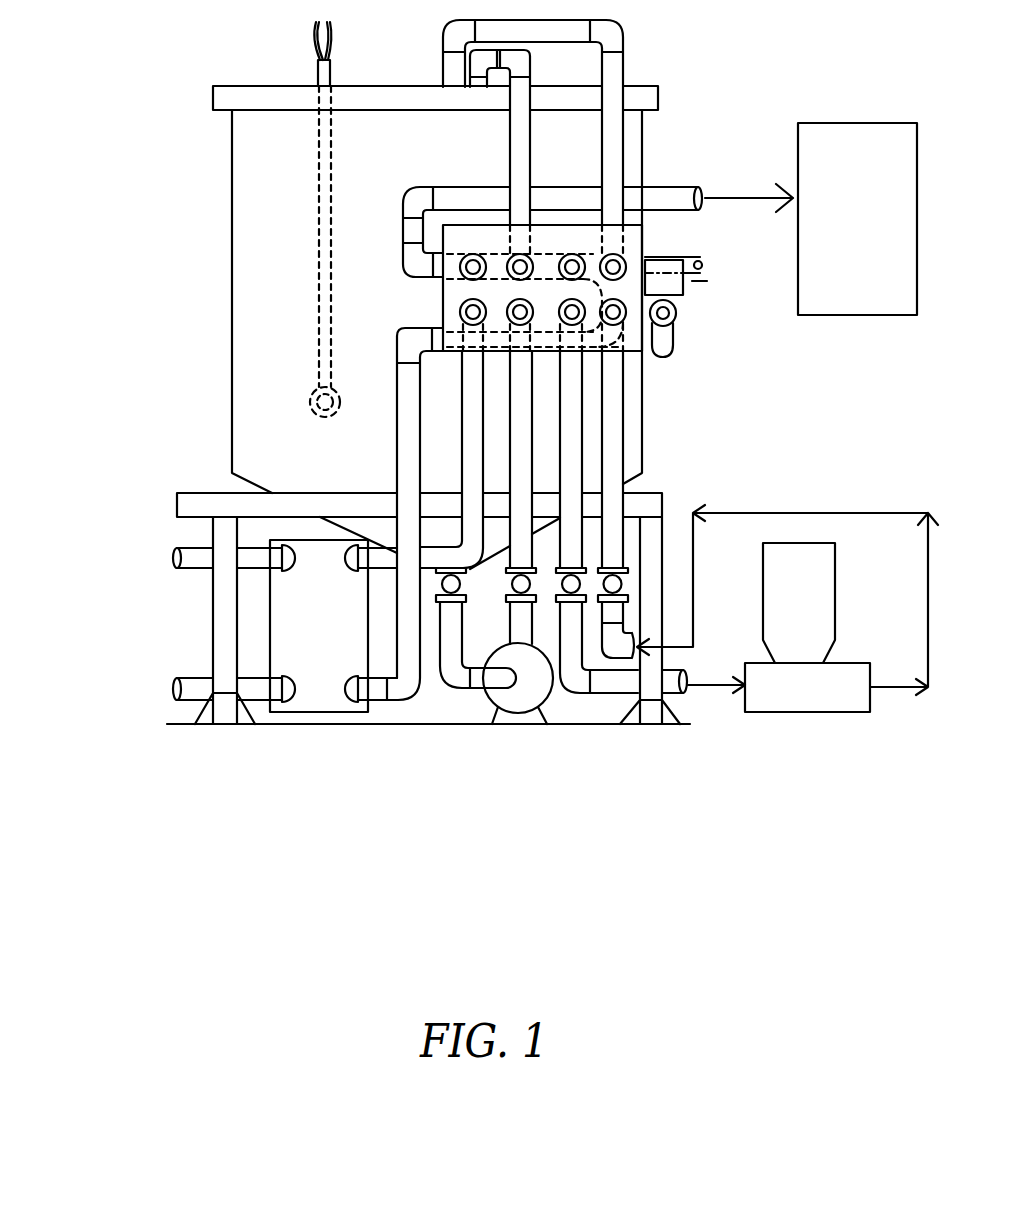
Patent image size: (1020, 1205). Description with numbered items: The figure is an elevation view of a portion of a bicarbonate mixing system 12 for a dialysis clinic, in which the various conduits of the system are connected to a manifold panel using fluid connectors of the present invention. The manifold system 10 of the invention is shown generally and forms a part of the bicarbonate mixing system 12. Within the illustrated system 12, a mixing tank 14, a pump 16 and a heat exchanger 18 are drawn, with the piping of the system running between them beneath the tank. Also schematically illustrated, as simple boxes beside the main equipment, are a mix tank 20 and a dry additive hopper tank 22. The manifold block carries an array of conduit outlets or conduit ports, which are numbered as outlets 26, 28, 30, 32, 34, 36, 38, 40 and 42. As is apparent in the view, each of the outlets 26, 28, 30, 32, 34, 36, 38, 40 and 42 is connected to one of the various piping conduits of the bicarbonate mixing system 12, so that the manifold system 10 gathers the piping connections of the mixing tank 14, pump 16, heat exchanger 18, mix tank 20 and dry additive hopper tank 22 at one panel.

The manifold system 10 is at (448, 292).
The bicarbonate mixing system 12 is at (172, 148).
The mixing tank 14 is at (250, 212).
The pump 16 is at (515, 702).
The heat exchanger 18 is at (318, 697).
The mix tank 20 is at (880, 225).
The dry additive hopper tank 22 is at (808, 603).
The conduit outlet 26 is at (473, 254).
The conduit outlet 28 is at (530, 257).
The conduit outlet 30 is at (571, 254).
The conduit outlet 32 is at (614, 256).
The conduit outlet 34 is at (460, 312).
The conduit outlet 36 is at (511, 320).
The conduit outlet 38 is at (573, 324).
The conduit outlet 40 is at (618, 324).
The conduit outlet 42 is at (675, 315).